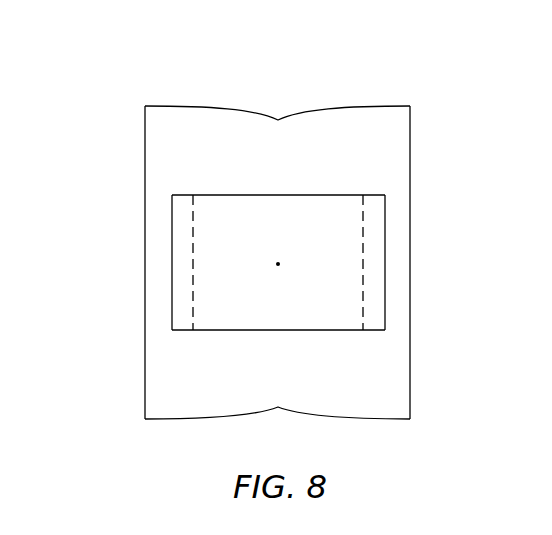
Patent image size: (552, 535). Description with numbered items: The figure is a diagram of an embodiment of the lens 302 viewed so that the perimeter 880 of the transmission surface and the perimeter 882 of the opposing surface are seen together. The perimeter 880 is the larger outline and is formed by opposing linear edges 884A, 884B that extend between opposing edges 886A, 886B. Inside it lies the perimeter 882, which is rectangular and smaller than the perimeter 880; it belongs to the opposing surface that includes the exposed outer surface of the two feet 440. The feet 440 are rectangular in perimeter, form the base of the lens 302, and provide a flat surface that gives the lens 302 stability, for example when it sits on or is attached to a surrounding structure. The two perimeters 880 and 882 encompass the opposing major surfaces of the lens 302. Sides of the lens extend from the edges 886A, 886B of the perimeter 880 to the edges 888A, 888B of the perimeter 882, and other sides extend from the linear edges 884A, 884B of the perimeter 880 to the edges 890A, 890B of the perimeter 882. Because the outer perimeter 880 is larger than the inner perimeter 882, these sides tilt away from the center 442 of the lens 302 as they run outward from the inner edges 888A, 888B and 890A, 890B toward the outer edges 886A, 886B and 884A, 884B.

The lens 302 is at (108, 67).
The perimeter of the transmission surface 880 is at (440, 105).
The perimeter of the opposing surface 882 is at (340, 173).
The linear edge 884A is at (145, 207).
The linear edge 884B is at (411, 308).
The edge 886A is at (264, 110).
The edge 886B is at (302, 418).
The edge 888A is at (297, 195).
The edge 888B is at (297, 330).
The edge 890A is at (172, 292).
The edge 890B is at (385, 278).
The feet 440 is at (190, 250).
The center 442 is at (280, 264).